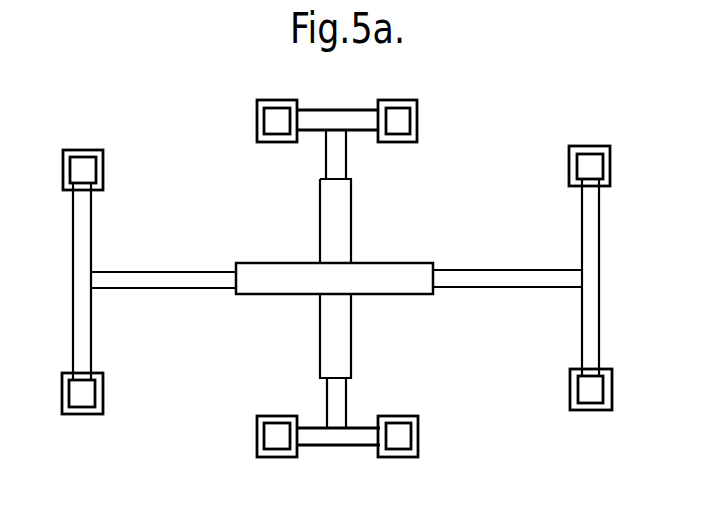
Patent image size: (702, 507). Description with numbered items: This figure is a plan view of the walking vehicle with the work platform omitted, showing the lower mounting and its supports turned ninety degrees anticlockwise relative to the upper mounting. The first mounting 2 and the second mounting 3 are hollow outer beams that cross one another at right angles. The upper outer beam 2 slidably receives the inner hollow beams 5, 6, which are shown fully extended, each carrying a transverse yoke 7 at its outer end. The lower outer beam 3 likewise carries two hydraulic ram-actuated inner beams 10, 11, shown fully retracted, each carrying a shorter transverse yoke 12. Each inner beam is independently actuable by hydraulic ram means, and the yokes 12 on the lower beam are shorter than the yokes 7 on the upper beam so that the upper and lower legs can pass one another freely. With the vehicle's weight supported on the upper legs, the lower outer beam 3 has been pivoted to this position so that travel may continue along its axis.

The first mounting 2 is at (377, 278).
The second mounting 3 is at (339, 219).
The extension 5 is at (562, 278).
The extension 6 is at (111, 281).
The transverse yoke 7 is at (83, 233).
The inner beam 10 is at (337, 157).
The inner beam 11 is at (337, 399).
The transverse yoke 12 is at (314, 122).